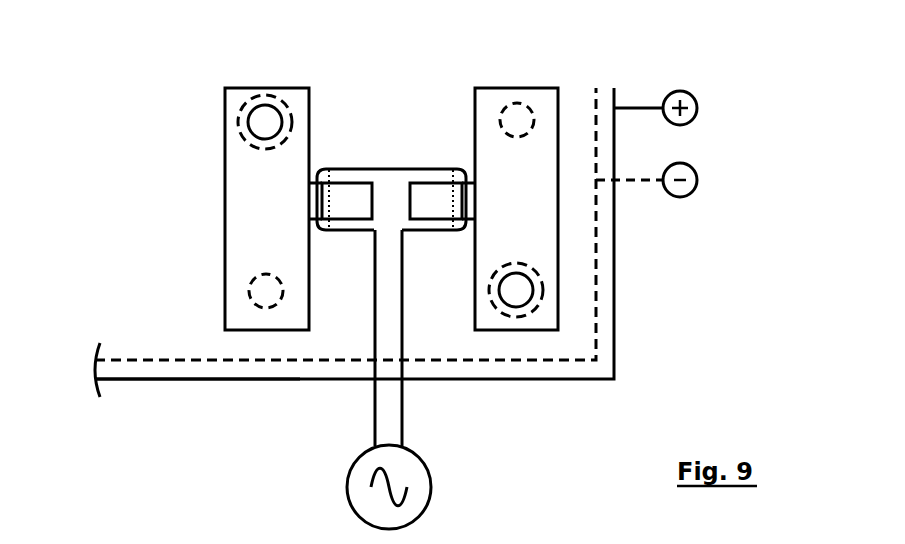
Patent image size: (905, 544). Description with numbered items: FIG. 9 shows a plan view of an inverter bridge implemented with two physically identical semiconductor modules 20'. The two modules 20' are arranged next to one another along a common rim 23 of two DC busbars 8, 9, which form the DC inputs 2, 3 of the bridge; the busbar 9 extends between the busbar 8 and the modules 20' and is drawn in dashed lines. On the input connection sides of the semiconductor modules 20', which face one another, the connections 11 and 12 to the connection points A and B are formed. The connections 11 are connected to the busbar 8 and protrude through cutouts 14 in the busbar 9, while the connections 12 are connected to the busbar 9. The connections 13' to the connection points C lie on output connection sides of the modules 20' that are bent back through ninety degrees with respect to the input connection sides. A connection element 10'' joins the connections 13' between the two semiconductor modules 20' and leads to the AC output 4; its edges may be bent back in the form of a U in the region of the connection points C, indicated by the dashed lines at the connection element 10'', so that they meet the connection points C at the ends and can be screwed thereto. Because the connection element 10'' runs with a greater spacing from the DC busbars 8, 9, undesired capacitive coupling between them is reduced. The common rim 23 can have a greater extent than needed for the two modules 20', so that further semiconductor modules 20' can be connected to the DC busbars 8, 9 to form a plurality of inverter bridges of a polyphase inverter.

The DC input 2 is at (698, 95).
The DC input 3 is at (700, 177).
The AC output 4 is at (432, 484).
The DC busbar 8 is at (616, 370).
The DC busbar 9 is at (598, 302).
The connection element 10'' is at (461, 338).
The connection 11 is at (256, 113).
The connection 12 is at (523, 104).
The connection 13' is at (392, 162).
The cutout 14 is at (243, 125).
The semiconductor module 20' is at (419, 287).
The common rim 23 is at (116, 392).